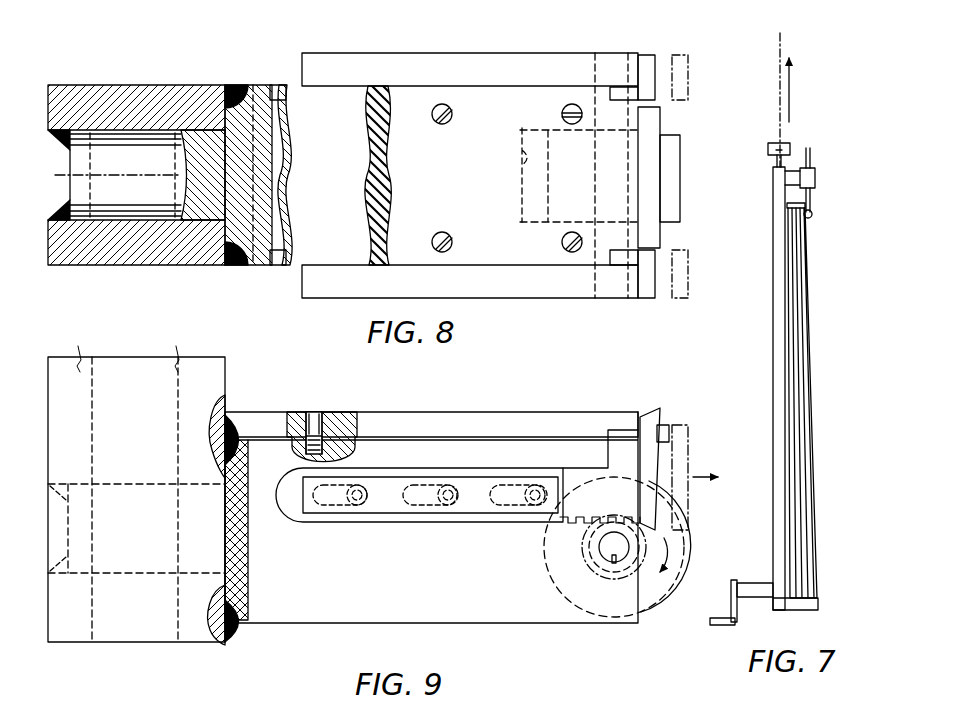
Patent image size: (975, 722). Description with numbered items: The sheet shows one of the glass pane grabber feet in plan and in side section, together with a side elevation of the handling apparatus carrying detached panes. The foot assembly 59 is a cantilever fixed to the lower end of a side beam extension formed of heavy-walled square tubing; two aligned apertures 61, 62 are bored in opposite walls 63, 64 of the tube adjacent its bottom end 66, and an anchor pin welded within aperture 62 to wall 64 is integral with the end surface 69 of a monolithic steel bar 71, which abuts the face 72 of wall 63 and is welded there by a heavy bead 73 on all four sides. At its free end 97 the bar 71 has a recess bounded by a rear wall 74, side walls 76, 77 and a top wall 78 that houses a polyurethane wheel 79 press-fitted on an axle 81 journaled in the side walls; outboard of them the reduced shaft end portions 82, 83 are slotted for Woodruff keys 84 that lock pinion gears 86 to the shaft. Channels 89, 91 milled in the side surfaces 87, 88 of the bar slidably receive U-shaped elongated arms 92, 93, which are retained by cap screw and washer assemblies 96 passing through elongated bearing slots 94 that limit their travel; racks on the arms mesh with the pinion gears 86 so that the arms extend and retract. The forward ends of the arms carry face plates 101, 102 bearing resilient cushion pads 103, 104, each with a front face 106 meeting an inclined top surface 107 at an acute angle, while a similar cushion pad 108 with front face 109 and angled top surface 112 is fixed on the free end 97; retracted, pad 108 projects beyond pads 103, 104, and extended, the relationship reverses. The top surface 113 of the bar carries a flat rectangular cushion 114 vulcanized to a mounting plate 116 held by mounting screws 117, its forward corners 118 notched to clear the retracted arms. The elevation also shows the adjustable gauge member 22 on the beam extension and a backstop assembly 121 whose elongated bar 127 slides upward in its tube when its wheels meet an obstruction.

In FIG. 7, the adjustable gauge member 22 is at (741, 580).
In FIG. 8, the foot assembly 59 is at (266, 78).
In FIG. 9, the foot assembly 59 is at (322, 402).
In FIG. 7, the foot assembly 59 is at (800, 622).
In FIG. 8, the aperture 61 is at (153, 140).
In FIG. 8, the aperture 62 is at (102, 210).
In FIG. 9, the tube wall 63 is at (172, 472).
In FIG. 9, the tube wall 64 is at (108, 433).
In FIG. 9, the bottom end 66 is at (150, 644).
In FIG. 8, the end surface 69 is at (215, 205).
In FIG. 9, the end surface 69 is at (243, 554).
In FIG. 8, the steel bar 71 is at (246, 268).
In FIG. 9, the face 72 is at (227, 385).
In FIG. 9, the weld bead 73 is at (218, 428).
In FIG. 8, the rear wall 74 is at (520, 164).
In FIG. 8, the side wall 76 is at (522, 128).
In FIG. 8, the side wall 77 is at (516, 223).
In FIG. 9, the top wall 78 is at (602, 478).
In FIG. 8, the wheel 79 is at (678, 213).
In FIG. 9, the wheel 79 is at (655, 604).
In FIG. 8, the axle 81 is at (580, 176).
In FIG. 8, the shaft end portion 82 is at (612, 62).
In FIG. 8, the shaft end portion 83 is at (616, 287).
In FIG. 9, the Woodruff key 84 is at (598, 572).
In FIG. 9, the pinion gear 86 is at (560, 545).
In FIG. 8, the side surface 87 is at (447, 87).
In FIG. 8, the side surface 88 is at (545, 268).
In FIG. 8, the channel 89 is at (282, 88).
In FIG. 8, the channel 91 is at (281, 267).
In FIG. 9, the channel 91 is at (297, 478).
In FIG. 8, the elongated arm 92 is at (398, 62).
In FIG. 8, the elongated arm 93 is at (352, 287).
In FIG. 9, the elongated arm 93 is at (400, 524).
In FIG. 9, the bearing slot 94 is at (425, 470).
In FIG. 9, the cap screw and washer assembly 96 is at (460, 490).
In FIG. 8, the free end 97 is at (645, 120).
In FIG. 9, the free end 97 is at (643, 613).
In FIG. 8, the face plate 101 is at (633, 62).
In FIG. 8, the face plate 102 is at (633, 285).
In FIG. 8, the cushion pad 103 is at (648, 72).
In FIG. 8, the cushion pad 104 is at (652, 288).
In FIG. 9, the front face 106 is at (670, 437).
In FIG. 9, the top surface 107 is at (636, 420).
In FIG. 8, the cushion pad 108 is at (662, 182).
In FIG. 9, the cushion pad 108 is at (665, 425).
In FIG. 8, the front face 109 is at (662, 155).
In FIG. 9, the front face 109 is at (666, 428).
In FIG. 8, the top surface 112 is at (655, 206).
In FIG. 9, the top surface 112 is at (651, 408).
In FIG. 9, the top surface 113 is at (528, 440).
In FIG. 9, the rectangular cushion 114 is at (398, 424).
In FIG. 9, the mounting plate 116 is at (474, 438).
In FIG. 8, the mounting screw 117 is at (446, 126).
In FIG. 9, the mounting screw 117 is at (318, 412).
In FIG. 8, the notched corner 118 is at (612, 90).
In FIG. 7, the backstop assembly 121 is at (821, 150).
In FIG. 7, the elongated bar 127 is at (813, 207).